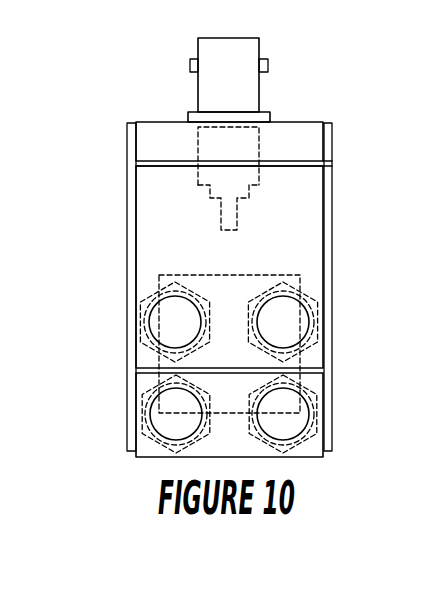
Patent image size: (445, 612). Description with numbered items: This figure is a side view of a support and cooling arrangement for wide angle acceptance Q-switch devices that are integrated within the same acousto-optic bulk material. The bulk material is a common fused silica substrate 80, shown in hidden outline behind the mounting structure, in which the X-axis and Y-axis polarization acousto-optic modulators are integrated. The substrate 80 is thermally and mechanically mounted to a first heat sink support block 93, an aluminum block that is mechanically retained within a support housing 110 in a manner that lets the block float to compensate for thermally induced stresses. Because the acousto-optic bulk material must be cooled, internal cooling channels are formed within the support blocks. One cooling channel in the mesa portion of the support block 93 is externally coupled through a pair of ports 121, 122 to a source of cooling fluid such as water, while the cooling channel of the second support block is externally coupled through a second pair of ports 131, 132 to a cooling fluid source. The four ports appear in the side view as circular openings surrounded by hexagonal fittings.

The support housing 110 is at (328, 161).
The first heat sink support block 93 is at (312, 227).
The common fused silica substrate 80 is at (248, 275).
The port 121 is at (179, 305).
The port 122 is at (305, 317).
The port 131 is at (183, 428).
The port 132 is at (300, 424).